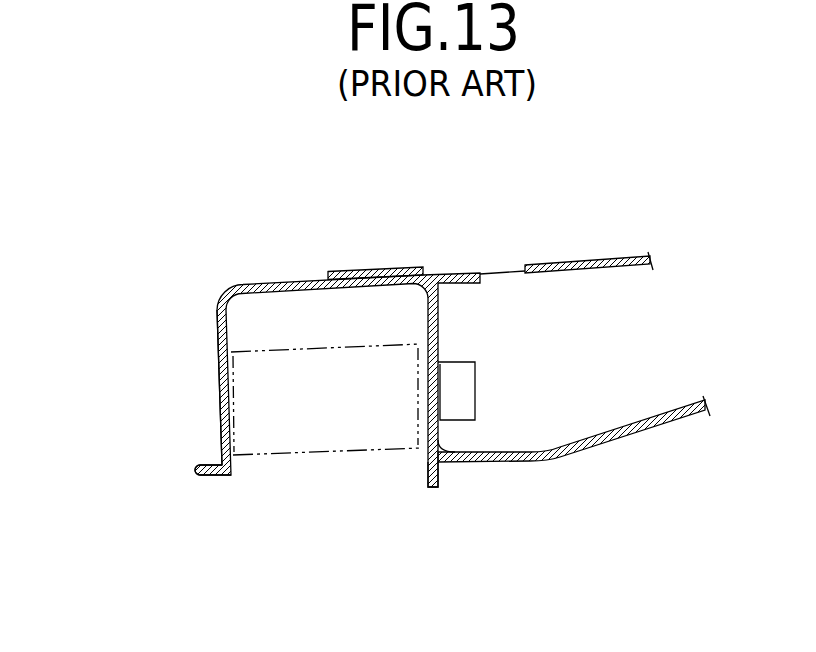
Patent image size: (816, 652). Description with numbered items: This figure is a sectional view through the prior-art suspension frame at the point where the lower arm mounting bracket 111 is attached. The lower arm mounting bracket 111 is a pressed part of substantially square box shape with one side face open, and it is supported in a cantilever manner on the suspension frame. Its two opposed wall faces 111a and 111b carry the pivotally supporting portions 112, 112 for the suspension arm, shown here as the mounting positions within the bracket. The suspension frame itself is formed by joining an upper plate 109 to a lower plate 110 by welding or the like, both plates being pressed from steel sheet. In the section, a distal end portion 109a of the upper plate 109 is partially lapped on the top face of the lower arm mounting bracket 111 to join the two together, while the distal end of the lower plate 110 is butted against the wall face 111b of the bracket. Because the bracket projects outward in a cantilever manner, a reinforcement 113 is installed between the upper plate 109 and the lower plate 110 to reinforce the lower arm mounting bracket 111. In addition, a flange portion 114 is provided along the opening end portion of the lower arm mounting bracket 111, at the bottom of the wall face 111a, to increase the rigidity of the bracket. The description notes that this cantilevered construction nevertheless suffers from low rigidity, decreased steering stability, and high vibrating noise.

The upper plate 109 is at (590, 262).
The distal end portion of the upper plate 109a is at (360, 272).
The lower plate 110 is at (543, 463).
The lower arm mounting bracket 111 is at (252, 285).
The wall face 111a is at (217, 336).
The wall face 111b is at (428, 458).
The pivotally supporting portion 112 is at (217, 403).
The reinforcement 113 is at (438, 329).
The flange portion 114 is at (205, 476).